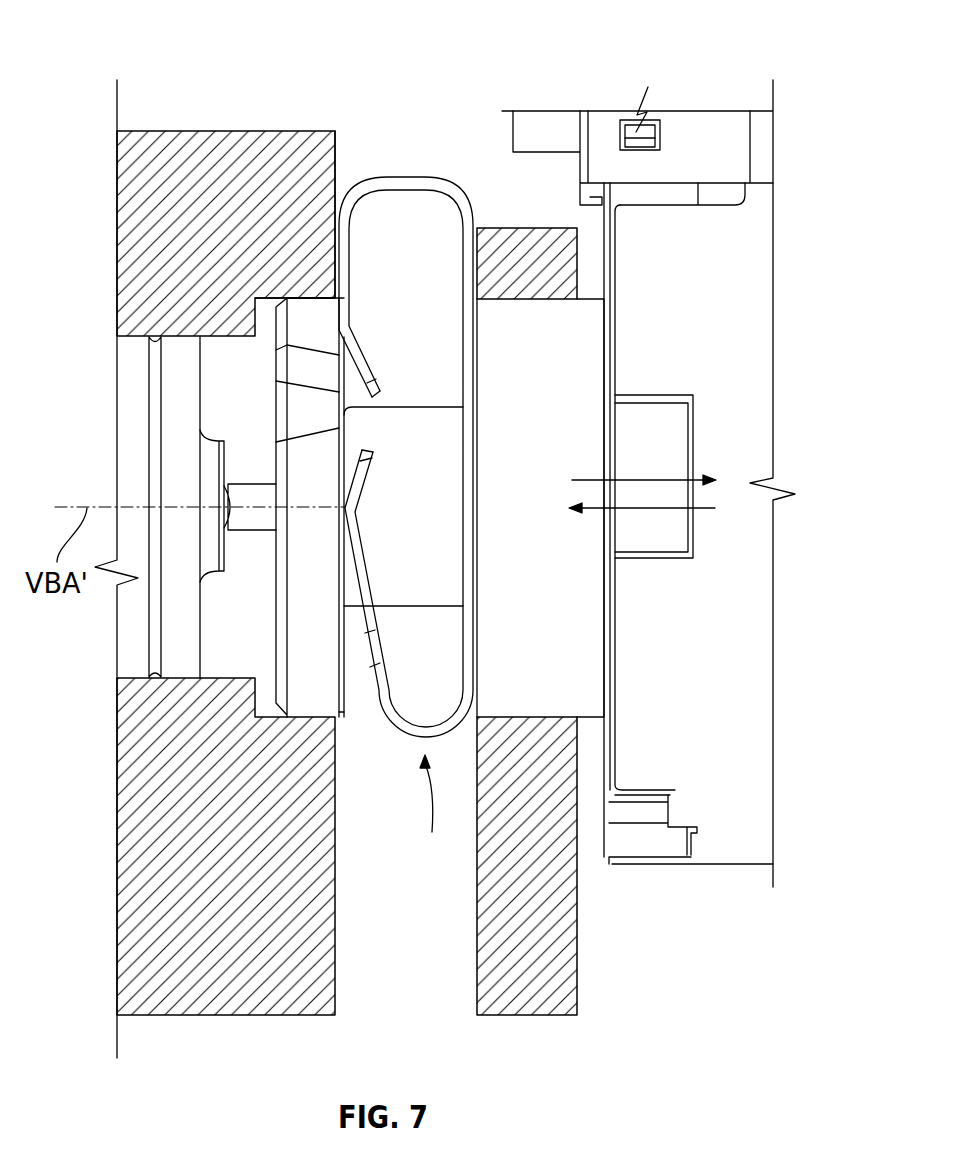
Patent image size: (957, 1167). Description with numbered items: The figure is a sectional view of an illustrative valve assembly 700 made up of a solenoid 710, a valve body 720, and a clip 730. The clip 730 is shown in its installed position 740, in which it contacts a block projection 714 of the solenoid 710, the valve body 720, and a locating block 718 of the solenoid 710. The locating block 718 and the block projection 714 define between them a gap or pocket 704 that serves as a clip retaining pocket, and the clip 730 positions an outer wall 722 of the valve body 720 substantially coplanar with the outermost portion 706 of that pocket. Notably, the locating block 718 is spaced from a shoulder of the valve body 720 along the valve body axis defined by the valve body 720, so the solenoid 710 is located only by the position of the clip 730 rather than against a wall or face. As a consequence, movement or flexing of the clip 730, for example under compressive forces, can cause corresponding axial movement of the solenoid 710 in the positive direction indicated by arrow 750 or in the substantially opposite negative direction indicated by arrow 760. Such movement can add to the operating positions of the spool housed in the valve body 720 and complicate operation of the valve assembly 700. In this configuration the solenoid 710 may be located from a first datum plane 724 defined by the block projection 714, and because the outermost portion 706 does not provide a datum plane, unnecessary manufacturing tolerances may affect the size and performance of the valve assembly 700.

The valve assembly 700 is at (445, 143).
The gap or pocket 704 is at (440, 702).
The portion 706 is at (345, 712).
The solenoid 710 is at (724, 367).
The block projection 714 is at (570, 638).
The locating block 718 is at (316, 683).
The valve body 720 is at (261, 169).
The wall 722 is at (336, 154).
The datum plane 724 is at (480, 360).
The clip 730 is at (374, 178).
The installed position 740 is at (441, 812).
The arrow 750 is at (648, 480).
The arrow 760 is at (648, 508).